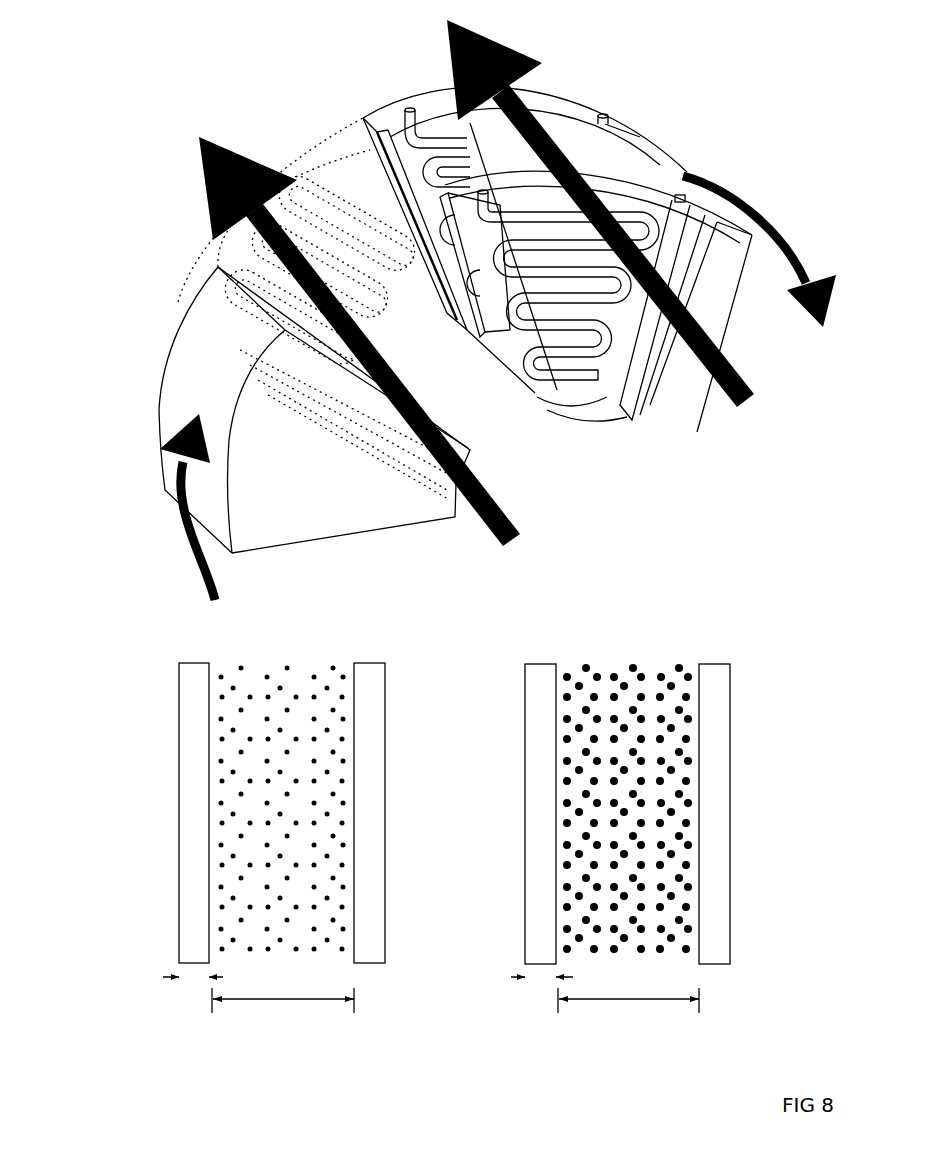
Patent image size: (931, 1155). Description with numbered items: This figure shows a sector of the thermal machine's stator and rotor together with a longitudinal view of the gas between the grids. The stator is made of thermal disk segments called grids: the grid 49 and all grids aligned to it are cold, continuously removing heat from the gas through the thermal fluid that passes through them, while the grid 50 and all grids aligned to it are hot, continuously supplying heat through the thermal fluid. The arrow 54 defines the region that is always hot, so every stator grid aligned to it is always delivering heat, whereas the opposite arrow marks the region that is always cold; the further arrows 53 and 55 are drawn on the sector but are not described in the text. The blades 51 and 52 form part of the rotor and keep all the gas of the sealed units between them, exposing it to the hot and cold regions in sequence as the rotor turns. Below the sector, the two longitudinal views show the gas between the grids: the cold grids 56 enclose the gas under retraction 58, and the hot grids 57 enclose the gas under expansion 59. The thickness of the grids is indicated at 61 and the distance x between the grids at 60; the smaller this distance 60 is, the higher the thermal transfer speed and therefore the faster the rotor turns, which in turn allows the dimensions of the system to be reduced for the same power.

The grid 49 is at (213, 250).
The grid 50 is at (390, 117).
The blade 51 is at (185, 388).
The blade 52 is at (635, 157).
The rotation direction arrow 53 is at (755, 198).
The arrow 54 is at (715, 393).
The displacement arrow 55 is at (507, 515).
The cold grids 56 is at (190, 677).
The hot grids 57 is at (713, 678).
The gas under retraction 58 is at (273, 710).
The gas under expansion 59 is at (620, 708).
The distance between the grids 60 is at (292, 1013).
The grids thickness 61 is at (530, 990).